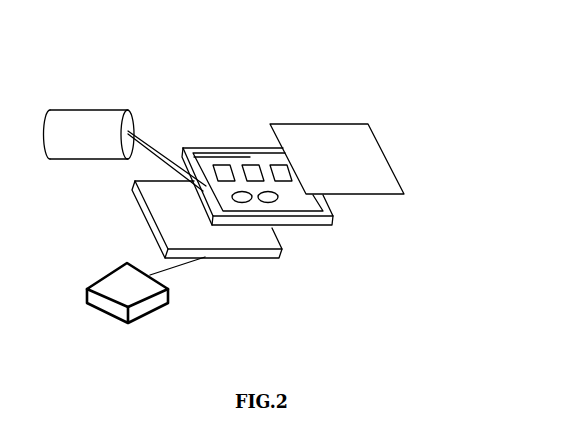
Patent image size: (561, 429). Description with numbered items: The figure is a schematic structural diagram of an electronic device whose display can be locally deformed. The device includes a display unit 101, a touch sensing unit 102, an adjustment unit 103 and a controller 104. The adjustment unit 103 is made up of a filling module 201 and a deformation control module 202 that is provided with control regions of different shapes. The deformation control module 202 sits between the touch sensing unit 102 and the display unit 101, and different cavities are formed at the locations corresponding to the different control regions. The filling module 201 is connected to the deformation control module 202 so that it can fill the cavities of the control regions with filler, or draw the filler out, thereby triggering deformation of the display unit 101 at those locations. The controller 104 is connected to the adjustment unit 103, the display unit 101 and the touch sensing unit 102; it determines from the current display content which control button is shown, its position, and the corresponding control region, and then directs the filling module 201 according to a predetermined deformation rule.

The display unit 101 is at (360, 149).
The touch sensing unit 102 is at (212, 249).
The adjustment unit 103 is at (88, 110).
The controller 104 is at (128, 293).
The filling module 201 is at (87, 159).
The deformation control module 202 is at (260, 215).